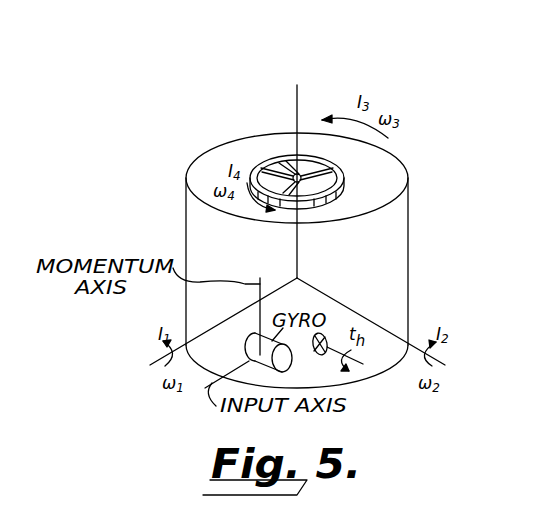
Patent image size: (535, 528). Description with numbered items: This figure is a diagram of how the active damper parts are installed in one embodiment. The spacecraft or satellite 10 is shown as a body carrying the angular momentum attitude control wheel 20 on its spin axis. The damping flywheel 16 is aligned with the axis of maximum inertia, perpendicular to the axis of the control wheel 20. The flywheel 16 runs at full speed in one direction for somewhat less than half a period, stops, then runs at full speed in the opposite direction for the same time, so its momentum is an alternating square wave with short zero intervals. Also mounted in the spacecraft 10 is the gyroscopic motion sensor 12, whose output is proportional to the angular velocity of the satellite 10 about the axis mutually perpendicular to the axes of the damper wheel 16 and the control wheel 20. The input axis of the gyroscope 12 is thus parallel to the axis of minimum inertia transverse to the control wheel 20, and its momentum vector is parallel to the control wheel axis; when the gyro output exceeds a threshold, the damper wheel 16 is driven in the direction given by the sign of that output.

The spacecraft or satellite 10 is at (408, 236).
The gyroscopic motion sensor 12 is at (245, 347).
The damping flywheel 16 is at (317, 356).
The angular momentum attitude control wheel 20 is at (265, 178).